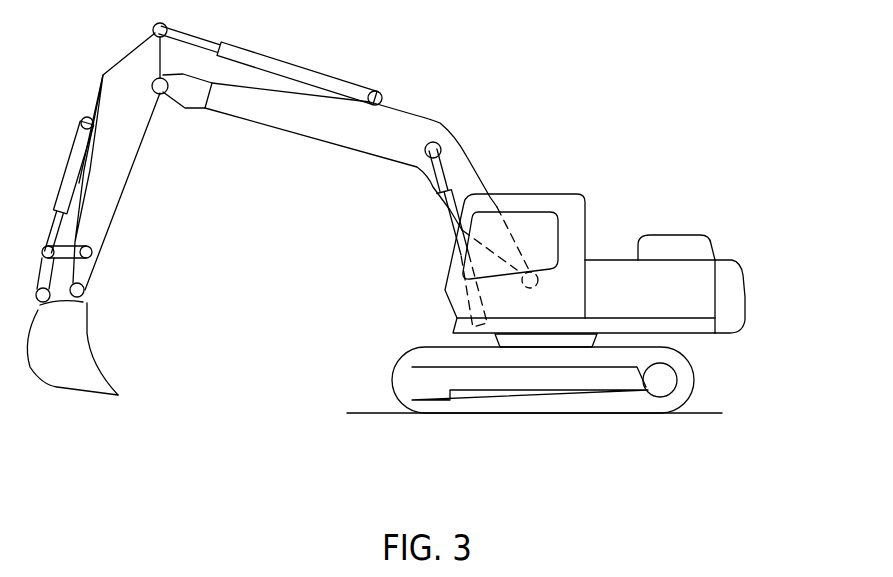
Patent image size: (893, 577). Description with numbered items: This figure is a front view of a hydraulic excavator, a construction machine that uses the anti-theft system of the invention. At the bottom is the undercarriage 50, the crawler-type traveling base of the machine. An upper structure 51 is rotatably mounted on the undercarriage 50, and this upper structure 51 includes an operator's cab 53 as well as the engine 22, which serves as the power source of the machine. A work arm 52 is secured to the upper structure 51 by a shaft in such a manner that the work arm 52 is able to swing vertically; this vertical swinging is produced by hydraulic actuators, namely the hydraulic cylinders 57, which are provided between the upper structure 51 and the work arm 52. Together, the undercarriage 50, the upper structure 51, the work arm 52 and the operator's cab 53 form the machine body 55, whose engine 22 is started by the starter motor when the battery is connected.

The engine 22 is at (665, 273).
The undercarriage 50 is at (535, 405).
The upper structure 51 is at (687, 327).
The work arm 52 is at (440, 123).
The operator's cab 53 is at (566, 203).
The machine body 55 is at (669, 132).
The hydraulic cylinders 57 is at (448, 230).